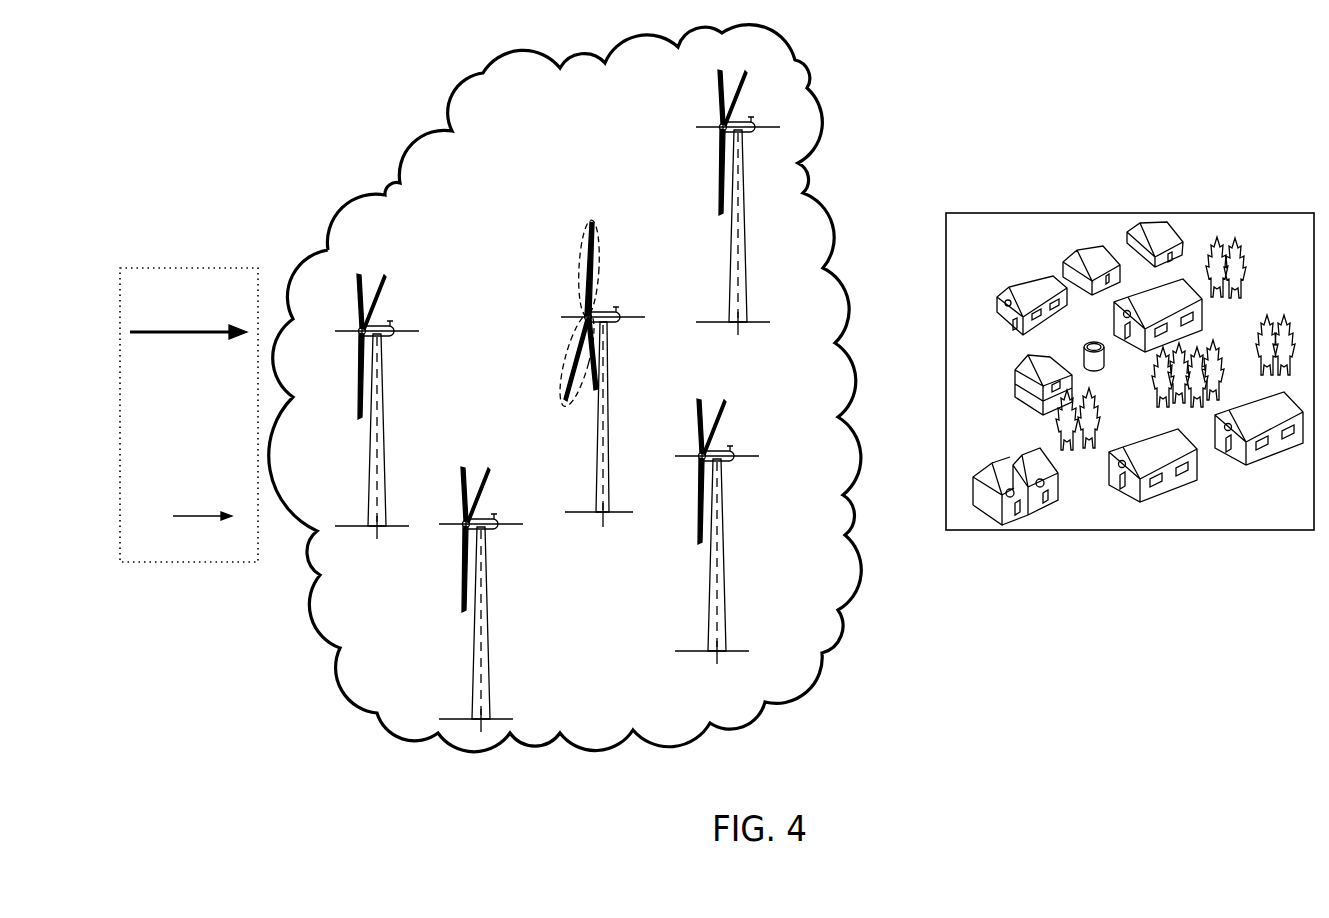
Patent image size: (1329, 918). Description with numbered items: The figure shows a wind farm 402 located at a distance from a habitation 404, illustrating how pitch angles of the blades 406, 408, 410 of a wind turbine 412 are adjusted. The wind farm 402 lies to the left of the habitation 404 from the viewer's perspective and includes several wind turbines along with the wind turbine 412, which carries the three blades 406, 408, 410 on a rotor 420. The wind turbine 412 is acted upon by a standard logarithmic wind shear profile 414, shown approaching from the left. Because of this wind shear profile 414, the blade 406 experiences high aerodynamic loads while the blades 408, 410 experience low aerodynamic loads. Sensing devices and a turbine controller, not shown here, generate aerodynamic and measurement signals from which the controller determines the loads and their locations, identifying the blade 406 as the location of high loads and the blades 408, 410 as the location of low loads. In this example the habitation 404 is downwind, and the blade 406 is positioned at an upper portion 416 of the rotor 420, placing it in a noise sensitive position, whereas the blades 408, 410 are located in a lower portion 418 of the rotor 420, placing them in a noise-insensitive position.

The wind farm 402 is at (822, 118).
The habitation 404 is at (1084, 212).
The blade 406 is at (586, 289).
The blade 408 is at (562, 378).
The blade 410 is at (591, 390).
The wind turbine 412 is at (565, 352).
The standard logarithmic wind shear profile 414 is at (188, 268).
The upper portion 416 is at (594, 223).
The lower portion 418 is at (605, 384).
The rotor 420 is at (580, 322).